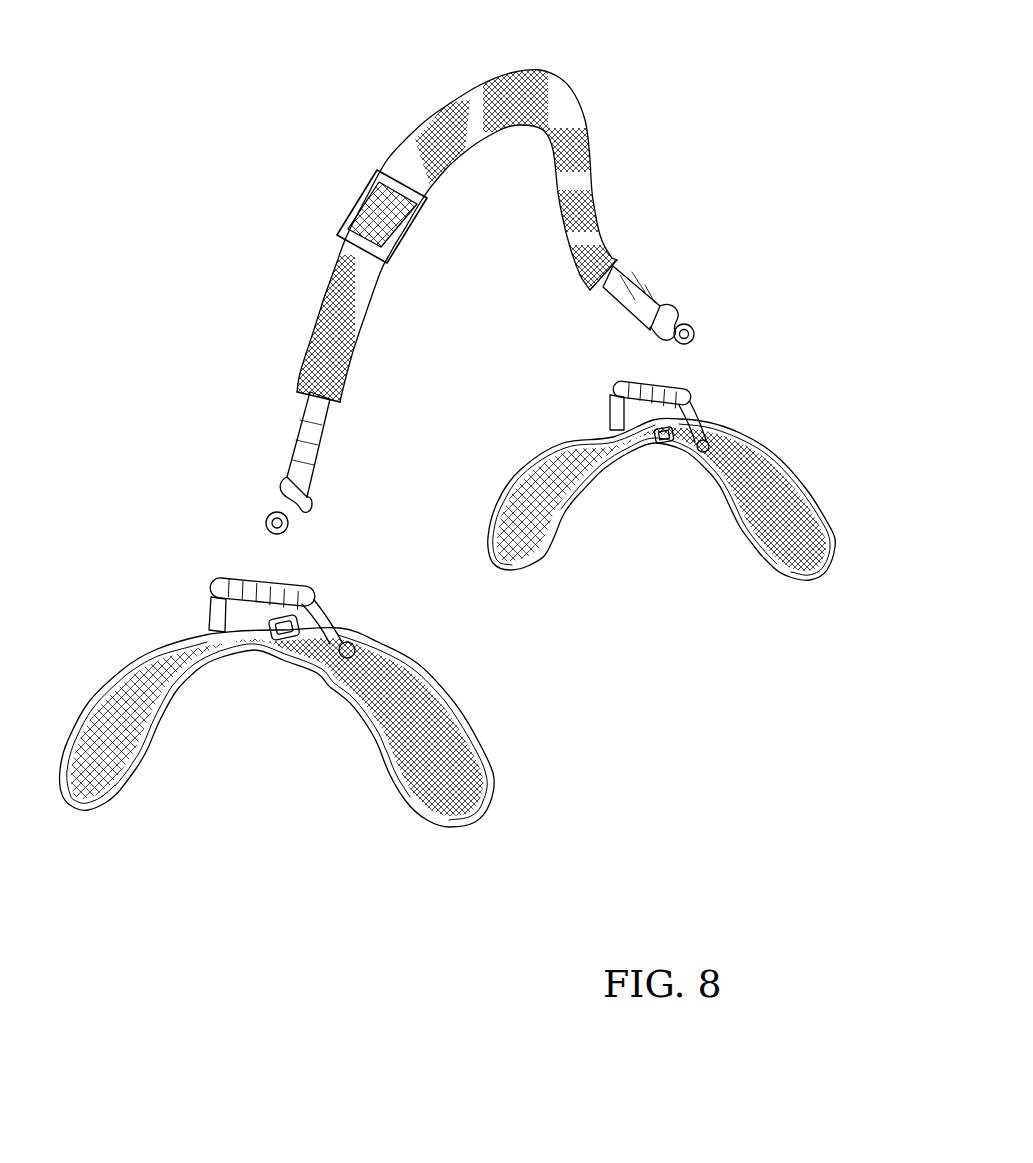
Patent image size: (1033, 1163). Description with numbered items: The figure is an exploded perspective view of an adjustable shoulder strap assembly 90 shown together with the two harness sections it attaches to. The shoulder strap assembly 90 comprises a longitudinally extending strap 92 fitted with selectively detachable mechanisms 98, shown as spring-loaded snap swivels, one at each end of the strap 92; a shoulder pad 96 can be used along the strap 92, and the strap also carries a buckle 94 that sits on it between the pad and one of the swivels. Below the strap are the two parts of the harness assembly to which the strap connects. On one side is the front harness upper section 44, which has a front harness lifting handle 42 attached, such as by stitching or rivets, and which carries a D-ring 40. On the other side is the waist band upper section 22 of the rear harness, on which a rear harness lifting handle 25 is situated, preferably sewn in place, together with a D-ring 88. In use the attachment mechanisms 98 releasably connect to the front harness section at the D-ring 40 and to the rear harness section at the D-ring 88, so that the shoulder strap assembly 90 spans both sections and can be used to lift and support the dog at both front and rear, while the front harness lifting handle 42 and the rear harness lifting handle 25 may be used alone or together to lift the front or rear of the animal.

The shoulder strap assembly 90 is at (276, 96).
The strap 92 is at (583, 105).
The adjustment buckle 94 is at (362, 190).
The shoulder pad 96 is at (500, 72).
The selectively detachable mechanisms 98 is at (640, 290).
The waist band upper section 22 is at (478, 822).
The rear harness lifting handle 25 is at (227, 573).
The D-ring 88 is at (282, 645).
The front harness lifting handle 42 is at (688, 385).
The D-ring 40 is at (660, 445).
The front harness upper section 44 is at (790, 577).